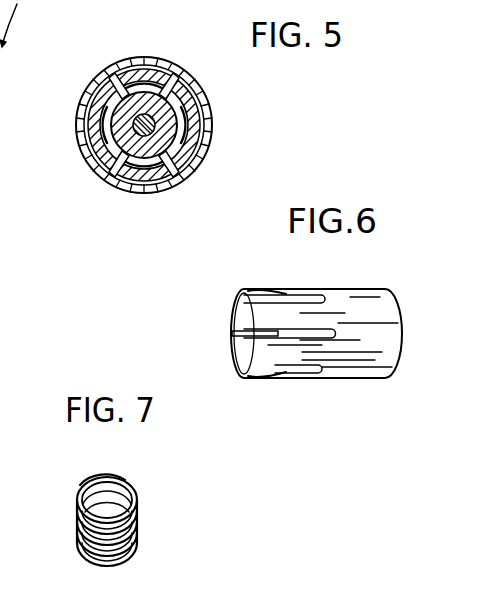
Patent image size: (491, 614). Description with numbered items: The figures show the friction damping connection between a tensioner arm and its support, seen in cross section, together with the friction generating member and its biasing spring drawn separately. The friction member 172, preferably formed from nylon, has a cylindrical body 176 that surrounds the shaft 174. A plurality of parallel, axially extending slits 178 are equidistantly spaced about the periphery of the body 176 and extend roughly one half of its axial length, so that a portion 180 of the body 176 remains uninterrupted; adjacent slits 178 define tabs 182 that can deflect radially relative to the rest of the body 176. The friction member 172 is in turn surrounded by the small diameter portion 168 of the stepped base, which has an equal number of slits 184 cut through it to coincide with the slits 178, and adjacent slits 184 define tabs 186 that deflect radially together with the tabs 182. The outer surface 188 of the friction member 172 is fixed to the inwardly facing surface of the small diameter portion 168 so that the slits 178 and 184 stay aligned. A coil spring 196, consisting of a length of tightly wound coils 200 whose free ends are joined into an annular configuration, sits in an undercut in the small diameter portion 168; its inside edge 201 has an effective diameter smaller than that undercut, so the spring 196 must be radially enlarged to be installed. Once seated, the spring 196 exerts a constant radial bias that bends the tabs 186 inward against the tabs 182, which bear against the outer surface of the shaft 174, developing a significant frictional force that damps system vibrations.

In FIG. 5, the small diameter portion 168 is at (103, 70).
In FIG. 5, the inside edge 201 is at (157, 55).
In FIG. 5, the shaft 174 is at (188, 82).
In FIG. 5, the tabs 186 is at (100, 100).
In FIG. 5, the slits 184 is at (138, 57).
In FIG. 5, the slits 178 is at (140, 187).
In FIG. 6, the slits 178 is at (328, 332).
In FIG. 5, the tabs 182 is at (128, 182).
In FIG. 6, the tabs 182 is at (300, 292).
In FIG. 6, the friction member 172 is at (395, 320).
In FIG. 6, the outer surface 188 is at (370, 292).
In FIG. 6, the portion 180 is at (365, 340).
In FIG. 6, the cylindrical body 176 is at (345, 375).
In FIG. 7, the coil spring 196 is at (125, 480).
In FIG. 7, the tightly wound coils 200 is at (96, 447).